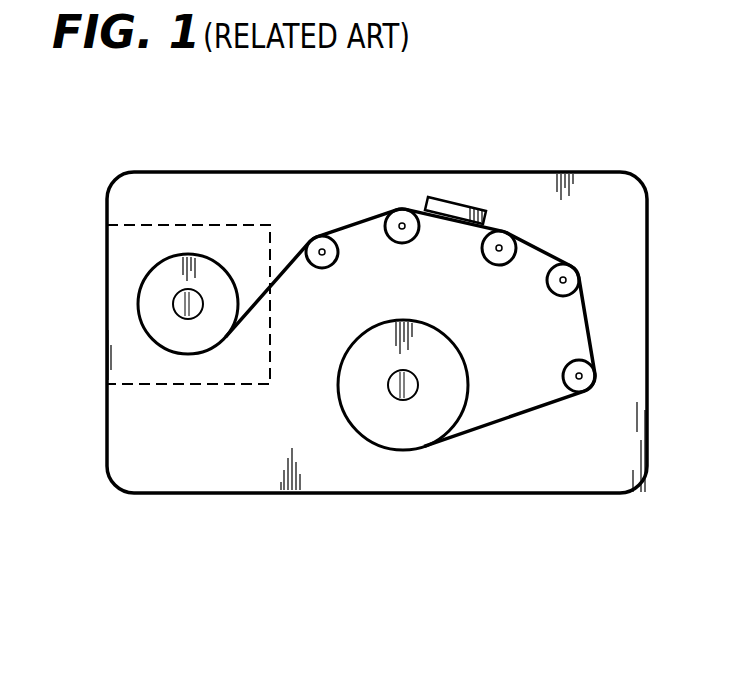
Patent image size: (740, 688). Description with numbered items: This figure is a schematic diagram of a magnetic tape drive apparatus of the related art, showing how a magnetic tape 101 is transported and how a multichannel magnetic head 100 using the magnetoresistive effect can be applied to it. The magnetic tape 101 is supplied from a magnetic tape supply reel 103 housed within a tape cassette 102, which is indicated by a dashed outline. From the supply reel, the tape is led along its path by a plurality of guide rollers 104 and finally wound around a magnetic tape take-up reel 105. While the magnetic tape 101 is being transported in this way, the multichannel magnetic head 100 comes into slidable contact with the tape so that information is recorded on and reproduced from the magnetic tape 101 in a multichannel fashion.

The multichannel magnetic head 100 is at (458, 206).
The magnetic tape 101 is at (372, 207).
The tape cassette 102 is at (161, 384).
The magnetic tape supply reel 103 is at (173, 278).
The guide rollers 104 is at (317, 236).
The magnetic tape take-up reel 105 is at (407, 428).